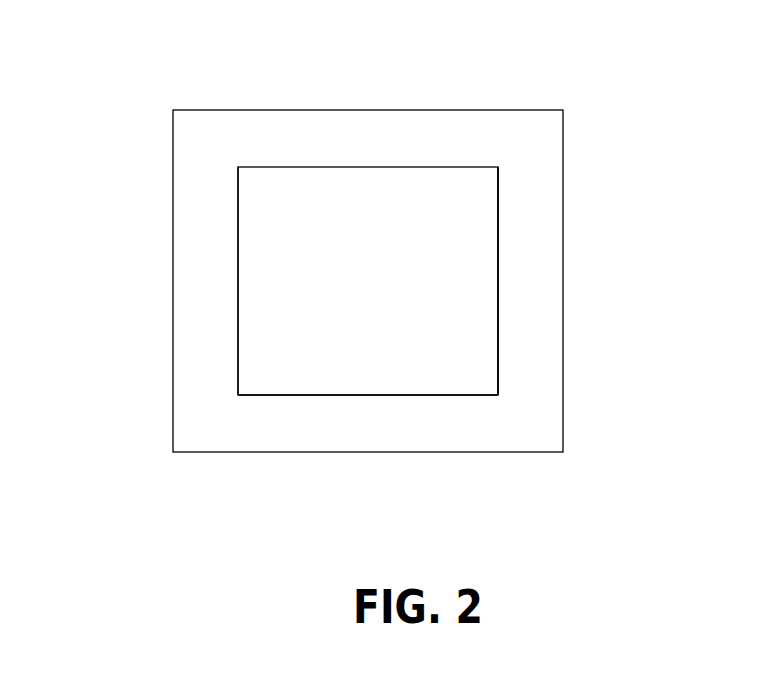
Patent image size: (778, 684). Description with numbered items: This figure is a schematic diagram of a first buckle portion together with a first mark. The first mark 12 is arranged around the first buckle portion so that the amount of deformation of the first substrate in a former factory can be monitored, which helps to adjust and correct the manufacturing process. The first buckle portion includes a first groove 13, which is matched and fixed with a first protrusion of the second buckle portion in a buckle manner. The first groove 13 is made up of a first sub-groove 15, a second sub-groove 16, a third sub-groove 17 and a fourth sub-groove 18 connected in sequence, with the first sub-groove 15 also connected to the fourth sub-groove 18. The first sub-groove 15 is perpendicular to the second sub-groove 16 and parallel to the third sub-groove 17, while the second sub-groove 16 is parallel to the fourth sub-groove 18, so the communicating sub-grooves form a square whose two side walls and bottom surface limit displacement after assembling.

The first mark 12 is at (563, 356).
The first groove 13 is at (498, 217).
The first sub-groove 15 is at (498, 295).
The second sub-groove 16 is at (413, 394).
The third sub-groove 17 is at (238, 278).
The fourth sub-groove 18 is at (395, 166).